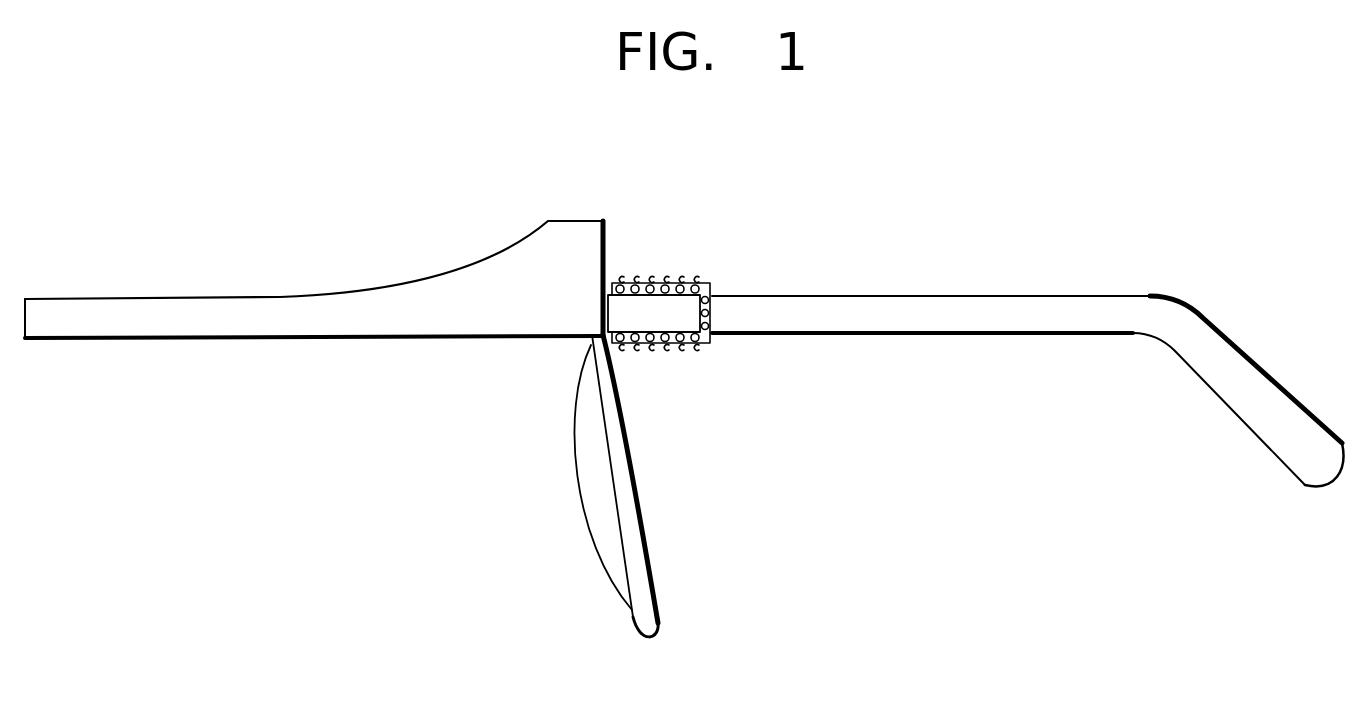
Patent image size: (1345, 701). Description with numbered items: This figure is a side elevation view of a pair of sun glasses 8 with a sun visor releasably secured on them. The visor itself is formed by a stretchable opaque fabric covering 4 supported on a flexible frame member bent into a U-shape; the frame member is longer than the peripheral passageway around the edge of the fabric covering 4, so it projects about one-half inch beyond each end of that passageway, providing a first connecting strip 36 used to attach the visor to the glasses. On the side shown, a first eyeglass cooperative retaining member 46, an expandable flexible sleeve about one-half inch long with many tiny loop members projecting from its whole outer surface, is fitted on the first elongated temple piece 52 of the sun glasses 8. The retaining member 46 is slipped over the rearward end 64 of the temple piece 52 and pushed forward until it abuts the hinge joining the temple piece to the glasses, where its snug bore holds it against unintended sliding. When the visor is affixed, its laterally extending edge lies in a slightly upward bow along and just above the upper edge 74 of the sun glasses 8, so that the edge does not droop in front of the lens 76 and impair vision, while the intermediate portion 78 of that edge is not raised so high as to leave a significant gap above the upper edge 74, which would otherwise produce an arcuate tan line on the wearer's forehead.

The stretchable opaque fabric covering 4 is at (280, 297).
The sun glasses 8 is at (642, 503).
The first connecting strip 36 is at (665, 343).
The first eyeglass cooperative retaining member 46 is at (702, 280).
The first elongated temple piece 52 is at (1065, 293).
The rearward end of the temple piece 64 is at (1322, 468).
The upper edge of the sun glasses 74 is at (606, 284).
The lens 76 is at (575, 478).
The intermediate portion 78 is at (604, 223).